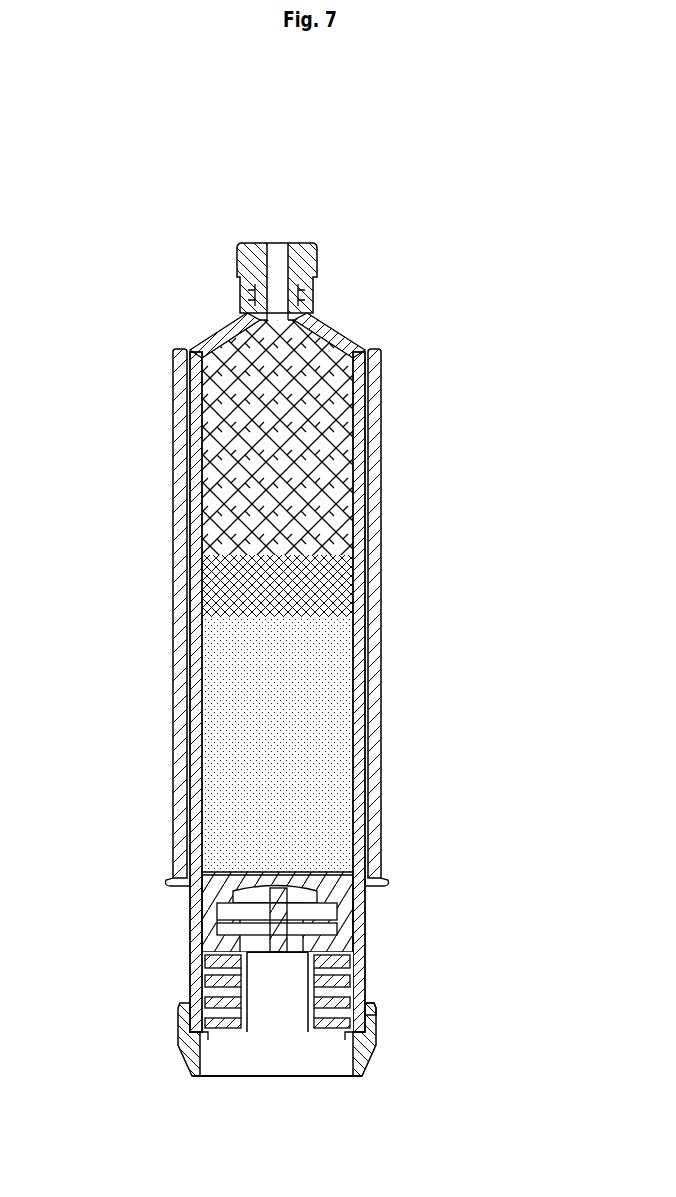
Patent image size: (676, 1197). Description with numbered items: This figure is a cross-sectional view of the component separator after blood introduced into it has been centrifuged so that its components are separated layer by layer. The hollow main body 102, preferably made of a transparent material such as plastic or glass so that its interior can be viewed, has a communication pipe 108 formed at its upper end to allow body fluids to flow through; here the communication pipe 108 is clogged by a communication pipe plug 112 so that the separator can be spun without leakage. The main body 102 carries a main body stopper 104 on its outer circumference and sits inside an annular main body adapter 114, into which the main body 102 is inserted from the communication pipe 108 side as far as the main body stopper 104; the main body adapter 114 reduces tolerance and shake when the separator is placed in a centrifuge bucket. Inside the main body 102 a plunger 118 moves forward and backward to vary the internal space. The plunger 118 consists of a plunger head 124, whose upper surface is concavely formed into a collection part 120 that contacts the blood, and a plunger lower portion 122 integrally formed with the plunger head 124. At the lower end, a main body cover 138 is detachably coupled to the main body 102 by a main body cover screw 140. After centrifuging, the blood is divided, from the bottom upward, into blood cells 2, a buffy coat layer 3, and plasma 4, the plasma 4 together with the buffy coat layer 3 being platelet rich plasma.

The blood cells 2 is at (243, 695).
The buffy coat layer 3 is at (206, 594).
The plasma 4 is at (206, 480).
The main body 102 is at (369, 633).
The main body stopper 104 is at (368, 883).
The communication pipe 108 is at (303, 300).
The communication pipe plug 112 is at (303, 262).
The main body adapter 114 is at (383, 568).
The plunger 118 is at (236, 866).
The collection part 120 is at (300, 866).
The plunger lower portion 122 is at (355, 975).
The plunger head 124 is at (350, 890).
The main body cover 138 is at (368, 1043).
The main body cover screw 140 is at (364, 1010).